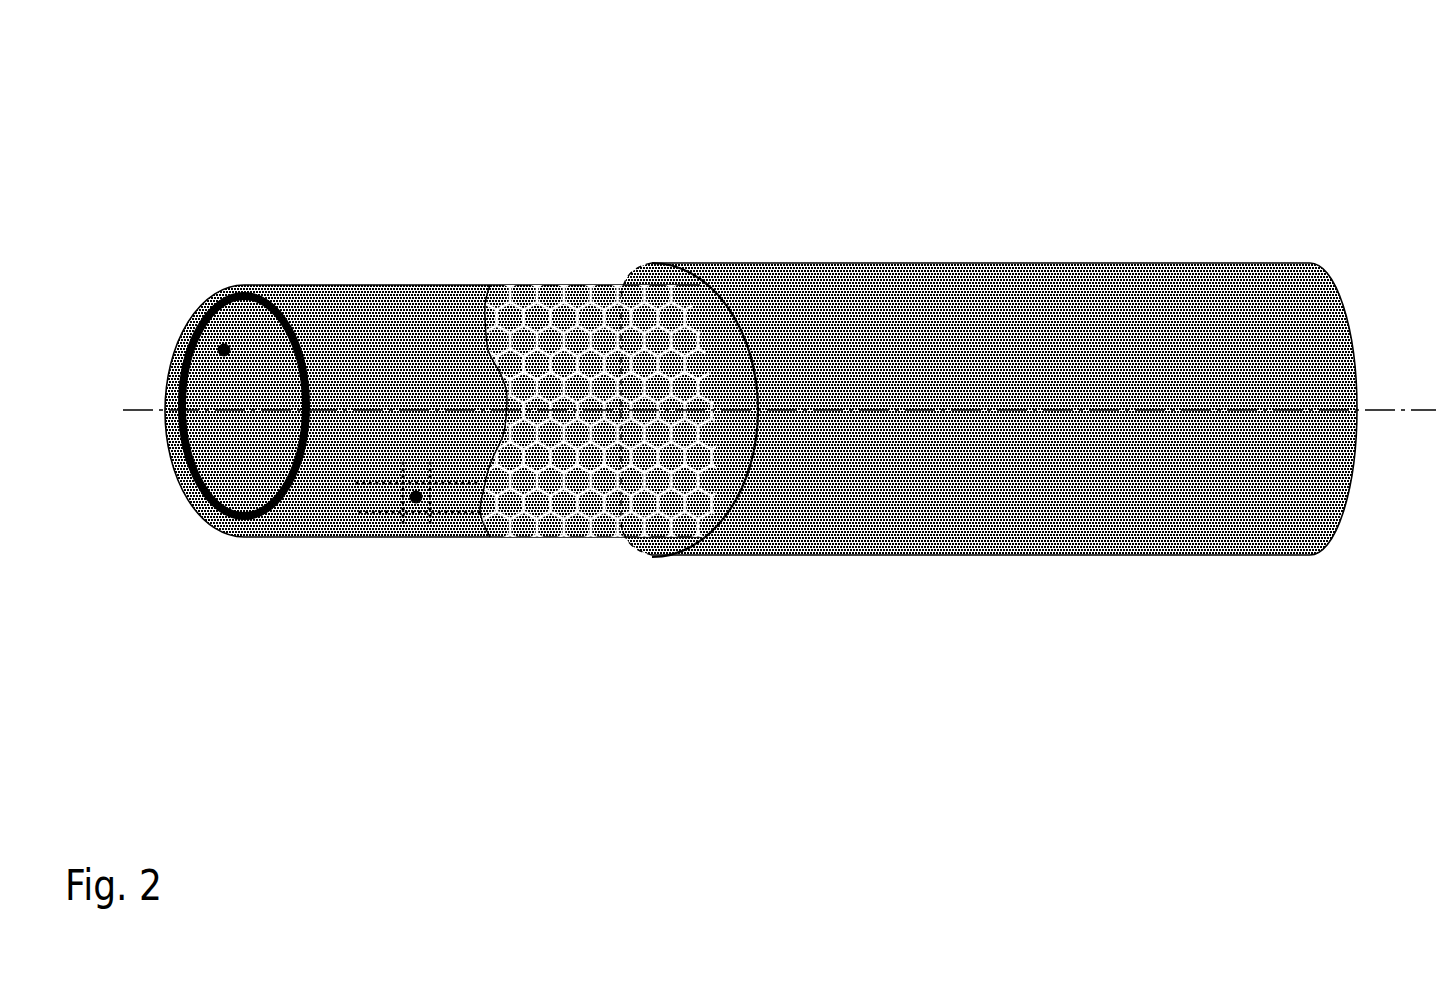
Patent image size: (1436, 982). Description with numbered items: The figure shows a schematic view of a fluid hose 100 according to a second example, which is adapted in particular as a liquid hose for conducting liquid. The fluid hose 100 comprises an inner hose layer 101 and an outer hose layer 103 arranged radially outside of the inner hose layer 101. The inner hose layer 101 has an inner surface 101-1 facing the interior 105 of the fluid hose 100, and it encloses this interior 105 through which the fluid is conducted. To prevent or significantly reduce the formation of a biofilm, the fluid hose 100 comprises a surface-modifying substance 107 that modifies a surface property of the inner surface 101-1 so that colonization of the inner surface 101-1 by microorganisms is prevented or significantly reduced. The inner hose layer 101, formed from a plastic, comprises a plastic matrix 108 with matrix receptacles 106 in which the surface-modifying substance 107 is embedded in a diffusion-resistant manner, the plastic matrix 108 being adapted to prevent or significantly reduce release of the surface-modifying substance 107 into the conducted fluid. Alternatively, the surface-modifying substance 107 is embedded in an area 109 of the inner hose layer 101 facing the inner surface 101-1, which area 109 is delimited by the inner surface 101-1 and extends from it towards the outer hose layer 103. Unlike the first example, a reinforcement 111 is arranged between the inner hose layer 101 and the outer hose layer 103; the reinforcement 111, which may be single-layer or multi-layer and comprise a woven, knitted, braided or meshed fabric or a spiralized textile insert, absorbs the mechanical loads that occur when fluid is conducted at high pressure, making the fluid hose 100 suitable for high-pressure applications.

The fluid hose 100 is at (434, 168).
The inner hose layer 101 is at (352, 378).
The inner surface 101-1 is at (233, 487).
The outer hose layer 103 is at (785, 360).
The interior 105 is at (235, 438).
The matrix receptacles 106 is at (426, 512).
The surface-modifying substance 107 is at (220, 350).
The plastic matrix 108 is at (385, 513).
The area 109 is at (240, 292).
The reinforcement 111 is at (537, 315).